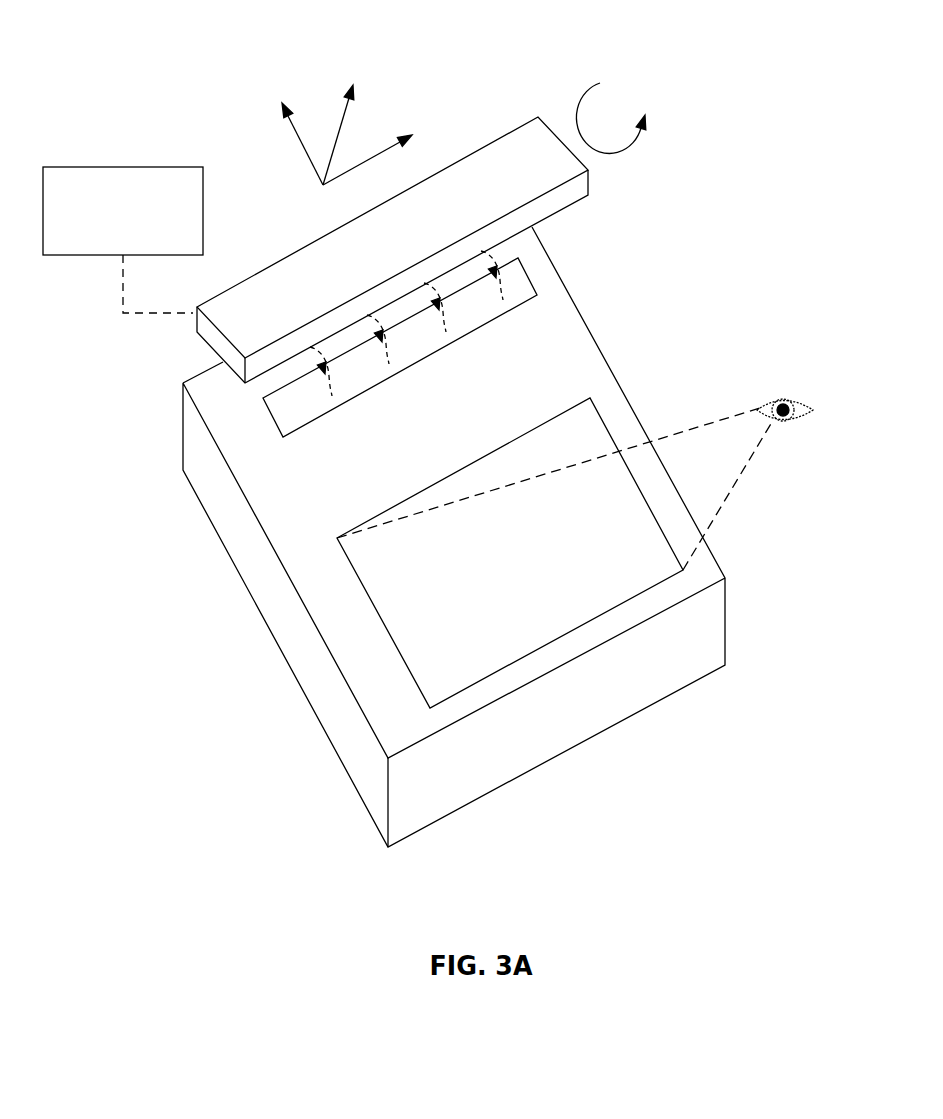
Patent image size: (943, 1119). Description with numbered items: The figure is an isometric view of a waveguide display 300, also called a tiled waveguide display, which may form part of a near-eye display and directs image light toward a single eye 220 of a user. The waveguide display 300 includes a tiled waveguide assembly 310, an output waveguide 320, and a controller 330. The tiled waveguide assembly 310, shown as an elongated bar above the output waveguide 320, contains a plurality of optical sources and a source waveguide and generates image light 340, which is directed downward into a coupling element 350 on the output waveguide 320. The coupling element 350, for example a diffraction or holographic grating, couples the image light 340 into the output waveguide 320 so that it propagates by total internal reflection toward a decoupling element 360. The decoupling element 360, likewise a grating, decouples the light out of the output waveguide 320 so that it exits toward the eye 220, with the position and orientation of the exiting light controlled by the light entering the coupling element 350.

The waveguide display 300 is at (80, 30).
The tiled waveguide assembly 310 is at (218, 349).
The output waveguide 320 is at (318, 637).
The controller 330 is at (141, 233).
The image light 340 is at (498, 288).
The coupling element 350 is at (272, 419).
The decoupling element 360 is at (422, 695).
The eye 220 is at (789, 449).